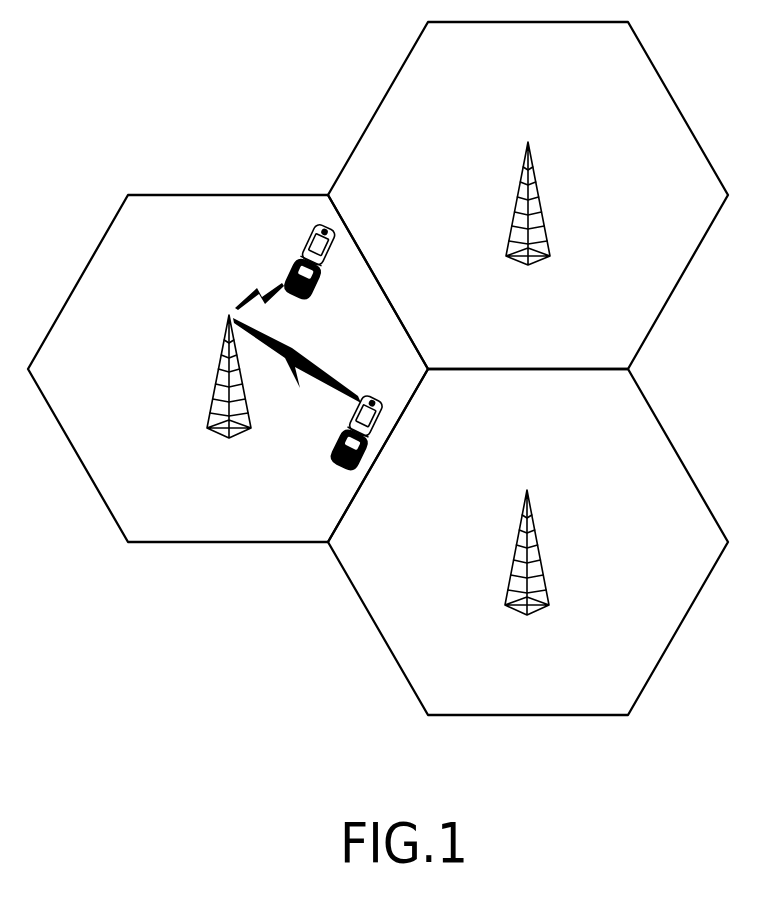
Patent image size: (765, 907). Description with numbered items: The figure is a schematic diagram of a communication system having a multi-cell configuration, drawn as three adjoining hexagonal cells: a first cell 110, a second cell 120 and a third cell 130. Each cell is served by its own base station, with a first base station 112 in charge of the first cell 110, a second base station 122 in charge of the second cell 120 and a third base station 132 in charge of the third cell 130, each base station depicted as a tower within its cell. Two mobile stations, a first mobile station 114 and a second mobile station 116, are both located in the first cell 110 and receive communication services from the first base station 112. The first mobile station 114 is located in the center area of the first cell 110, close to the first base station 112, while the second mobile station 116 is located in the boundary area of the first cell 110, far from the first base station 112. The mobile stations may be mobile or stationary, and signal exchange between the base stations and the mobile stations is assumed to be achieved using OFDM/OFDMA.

The cell #1 110 is at (77, 455).
The cell #2 120 is at (679, 455).
The cell #3 130 is at (679, 107).
The BS1 112 is at (213, 390).
The BS2 122 is at (542, 565).
The BS3 132 is at (542, 214).
The MS1 114 is at (305, 245).
The MS2 116 is at (335, 458).